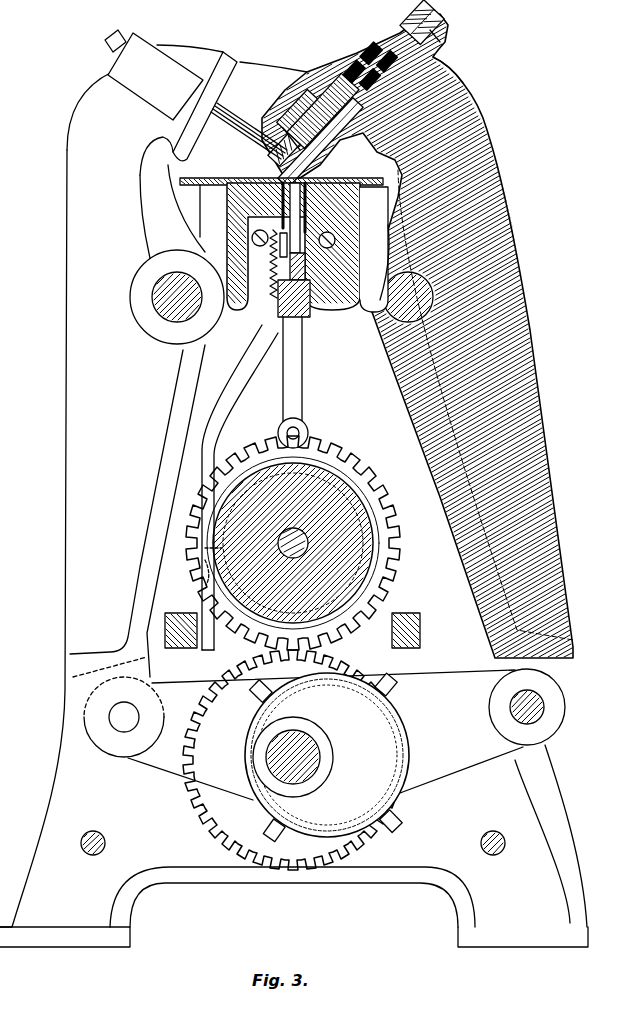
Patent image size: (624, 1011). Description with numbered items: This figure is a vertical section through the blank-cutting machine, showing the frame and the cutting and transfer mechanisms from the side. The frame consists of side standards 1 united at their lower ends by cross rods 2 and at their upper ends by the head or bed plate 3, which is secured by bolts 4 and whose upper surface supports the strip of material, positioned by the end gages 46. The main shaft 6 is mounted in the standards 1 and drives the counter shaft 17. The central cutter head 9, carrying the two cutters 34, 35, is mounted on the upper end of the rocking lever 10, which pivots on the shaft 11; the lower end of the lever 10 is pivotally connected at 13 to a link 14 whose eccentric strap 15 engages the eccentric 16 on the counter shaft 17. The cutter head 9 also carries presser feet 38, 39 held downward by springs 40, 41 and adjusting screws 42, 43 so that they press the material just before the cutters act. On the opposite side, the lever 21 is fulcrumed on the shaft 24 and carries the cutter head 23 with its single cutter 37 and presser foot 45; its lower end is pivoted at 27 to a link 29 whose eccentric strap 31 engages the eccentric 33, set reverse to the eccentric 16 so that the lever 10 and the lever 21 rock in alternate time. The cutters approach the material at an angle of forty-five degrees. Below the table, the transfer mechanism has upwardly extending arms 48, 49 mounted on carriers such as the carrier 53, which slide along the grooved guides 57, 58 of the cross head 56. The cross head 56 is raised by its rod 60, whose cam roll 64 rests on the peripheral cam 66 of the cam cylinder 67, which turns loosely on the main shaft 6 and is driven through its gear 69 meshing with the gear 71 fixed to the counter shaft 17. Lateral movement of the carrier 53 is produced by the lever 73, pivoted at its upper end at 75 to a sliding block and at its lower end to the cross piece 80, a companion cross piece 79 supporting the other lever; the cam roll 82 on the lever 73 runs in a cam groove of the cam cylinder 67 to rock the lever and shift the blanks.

The side standards 1 is at (415, 873).
The cross rods 2 is at (106, 843).
The head or bed plate 3 is at (364, 246).
The bolts 4 is at (251, 238).
The main shaft 6 is at (303, 552).
The central cutter head 9 is at (303, 86).
The rocking lever 10 is at (500, 200).
The shaft 11 is at (372, 310).
The pivotal connection 13 is at (538, 711).
The link 14 is at (452, 768).
The eccentric strap 15 is at (390, 706).
The eccentric 16 is at (327, 793).
The counter shaft 17 is at (300, 755).
The lever 21 is at (65, 482).
The cutter head 23 is at (243, 76).
The shaft 24 is at (158, 298).
The pivotal connection 27 is at (116, 714).
The link 29 is at (183, 773).
The eccentric strap 31 is at (307, 848).
The eccentric 33 is at (333, 838).
The cutter 34 is at (280, 168).
The cutter 35 is at (306, 126).
The cutter 37 is at (282, 127).
The presser foot 38 is at (292, 108).
The presser foot 39 is at (342, 164).
The spring 40 is at (378, 64).
The spring 41 is at (449, 80).
The adjusting screw 42 is at (424, 22).
The adjusting screw 43 is at (446, 46).
The presser foot 45 is at (247, 128).
The end gages 46 is at (374, 249).
The arm 48 is at (314, 300).
The arm 49 is at (227, 200).
The carrier 53 is at (270, 262).
The cross head 56 is at (285, 327).
The grooved guide 57 is at (309, 322).
The grooved guide 58 is at (279, 304).
The rod 60 is at (303, 392).
The cam roll 64 is at (310, 437).
The peripheral cam 66 is at (320, 458).
The cam cylinder 67 is at (340, 524).
The gear 69 is at (370, 478).
The gear 71 is at (336, 665).
The lever 73 is at (225, 432).
The pivotal connection 75 is at (280, 278).
The cross piece 79 is at (400, 632).
The cross piece 80 is at (182, 640).
The cam roll 82 is at (205, 566).